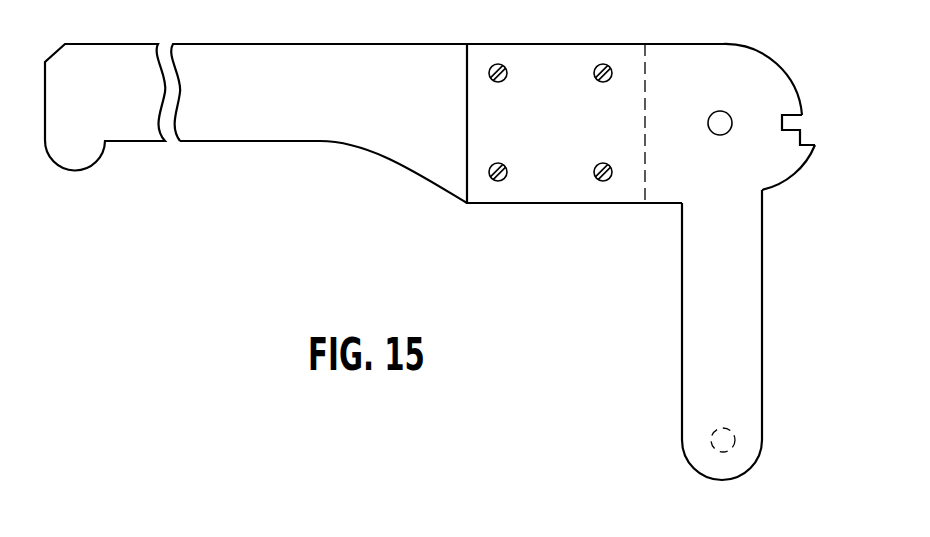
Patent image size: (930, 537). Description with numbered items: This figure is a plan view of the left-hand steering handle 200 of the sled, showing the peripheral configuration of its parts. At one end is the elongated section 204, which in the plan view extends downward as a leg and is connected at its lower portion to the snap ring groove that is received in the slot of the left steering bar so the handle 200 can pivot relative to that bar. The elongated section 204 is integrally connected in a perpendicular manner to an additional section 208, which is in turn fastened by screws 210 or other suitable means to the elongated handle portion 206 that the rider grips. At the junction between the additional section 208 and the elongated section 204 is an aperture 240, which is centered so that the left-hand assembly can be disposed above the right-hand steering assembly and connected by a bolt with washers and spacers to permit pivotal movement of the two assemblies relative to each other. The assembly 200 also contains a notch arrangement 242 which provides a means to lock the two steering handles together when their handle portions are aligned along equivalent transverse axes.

The left-hand steering handle 200 is at (772, 264).
The elongated section 204 is at (762, 385).
The elongated handle portion 206 is at (395, 163).
The additional section 208 is at (662, 207).
The screws 210 is at (507, 162).
The aperture 240 is at (718, 110).
The notch arrangement 242 is at (802, 114).